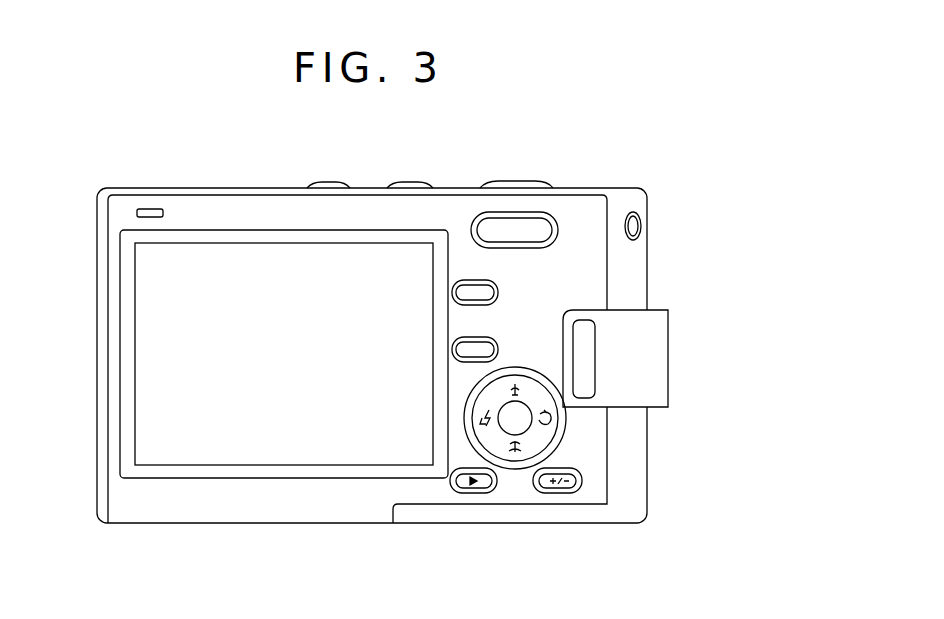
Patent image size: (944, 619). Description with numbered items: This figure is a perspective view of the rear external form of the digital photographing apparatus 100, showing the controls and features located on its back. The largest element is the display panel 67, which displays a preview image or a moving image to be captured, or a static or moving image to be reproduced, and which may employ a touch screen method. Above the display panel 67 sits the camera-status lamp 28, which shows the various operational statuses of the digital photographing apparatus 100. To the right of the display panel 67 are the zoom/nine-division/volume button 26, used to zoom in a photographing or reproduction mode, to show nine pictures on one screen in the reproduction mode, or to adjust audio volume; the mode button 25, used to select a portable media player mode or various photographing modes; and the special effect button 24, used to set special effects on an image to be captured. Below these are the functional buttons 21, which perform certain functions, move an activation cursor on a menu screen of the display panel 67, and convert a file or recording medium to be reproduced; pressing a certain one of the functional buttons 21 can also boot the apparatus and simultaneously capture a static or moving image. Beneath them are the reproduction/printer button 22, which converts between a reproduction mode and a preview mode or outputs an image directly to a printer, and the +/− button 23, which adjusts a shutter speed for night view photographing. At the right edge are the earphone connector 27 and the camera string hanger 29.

The digital photographing apparatus 100 is at (633, 162).
The display panel 67 is at (248, 263).
The camera-status lamp 28 is at (150, 209).
The zoom/9-division/volume button 26 is at (507, 228).
The mode button 25 is at (462, 288).
The special effect button 24 is at (488, 347).
The earphone connector 27 is at (642, 226).
The camera string hanger 29 is at (663, 358).
The functional buttons 21 is at (562, 432).
The reproduction/printer button 22 is at (473, 493).
The +/− button 23 is at (557, 493).